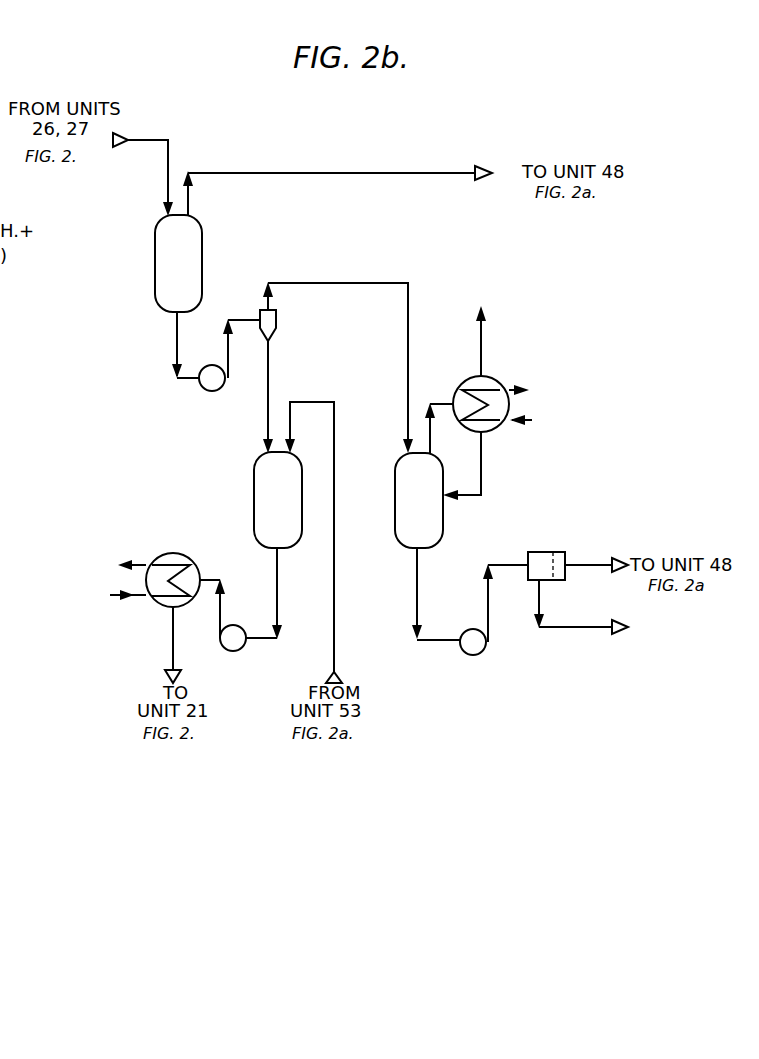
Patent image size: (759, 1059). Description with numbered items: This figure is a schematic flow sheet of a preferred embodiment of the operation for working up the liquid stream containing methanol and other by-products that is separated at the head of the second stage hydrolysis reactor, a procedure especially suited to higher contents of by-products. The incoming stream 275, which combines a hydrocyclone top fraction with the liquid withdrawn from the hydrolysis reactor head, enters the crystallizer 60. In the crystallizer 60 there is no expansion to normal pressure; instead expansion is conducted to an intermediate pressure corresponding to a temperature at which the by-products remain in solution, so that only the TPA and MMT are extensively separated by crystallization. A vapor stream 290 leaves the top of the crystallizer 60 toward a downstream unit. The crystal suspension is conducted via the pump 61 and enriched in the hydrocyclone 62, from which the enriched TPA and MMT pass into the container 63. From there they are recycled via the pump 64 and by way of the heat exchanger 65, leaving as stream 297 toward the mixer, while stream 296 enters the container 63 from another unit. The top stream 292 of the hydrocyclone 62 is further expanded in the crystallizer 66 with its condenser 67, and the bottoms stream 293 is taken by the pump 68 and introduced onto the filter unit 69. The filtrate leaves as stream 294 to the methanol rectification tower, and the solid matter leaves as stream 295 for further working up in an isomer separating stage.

The crystallizer 60 is at (155, 266).
The pump 61 is at (210, 391).
The hydrocyclone 62 is at (278, 332).
The container 63 is at (254, 500).
The pump 64 is at (230, 650).
The heat exchanger 65 is at (173, 553).
The crystallizer 66 is at (443, 528).
The condenser 67 is at (492, 383).
The pump 68 is at (478, 655).
The filter unit 69 is at (543, 552).
The stream 275 is at (143, 158).
The stream to unit 48 290 is at (337, 173).
The vapor stream 292 is at (340, 348).
The bottoms stream 293 is at (397, 582).
The stream to unit 48 294 is at (596, 549).
The outlet stream 295 is at (583, 643).
The stream from unit 53 296 is at (326, 542).
The stream to unit 21 297 is at (152, 644).